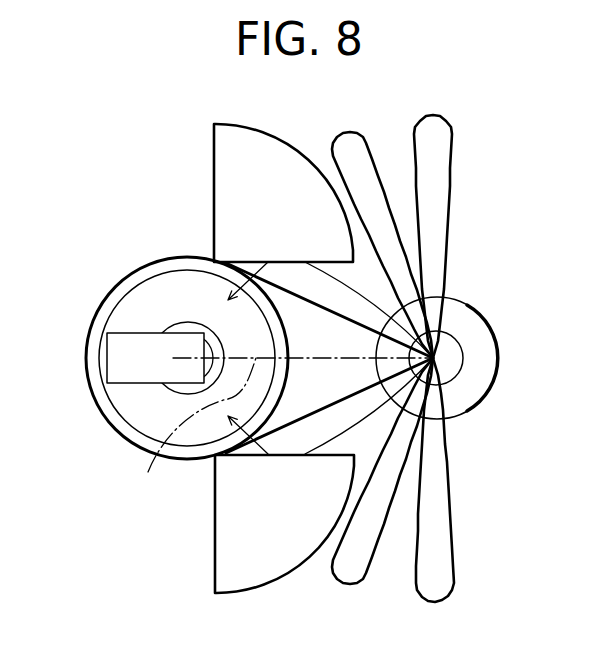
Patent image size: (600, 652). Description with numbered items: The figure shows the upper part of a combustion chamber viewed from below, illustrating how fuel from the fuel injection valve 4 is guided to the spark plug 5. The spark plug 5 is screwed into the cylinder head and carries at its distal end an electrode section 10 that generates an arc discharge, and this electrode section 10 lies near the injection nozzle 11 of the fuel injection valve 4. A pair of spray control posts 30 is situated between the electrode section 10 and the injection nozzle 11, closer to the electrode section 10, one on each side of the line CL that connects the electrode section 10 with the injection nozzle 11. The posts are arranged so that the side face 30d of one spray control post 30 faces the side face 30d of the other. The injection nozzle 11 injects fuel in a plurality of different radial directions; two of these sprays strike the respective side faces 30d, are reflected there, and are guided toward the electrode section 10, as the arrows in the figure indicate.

The fuel injection valve 4 is at (492, 328).
The injection nozzle 11 is at (437, 360).
The spray control post 30 is at (204, 168).
The side face 30d is at (348, 277).
The spark plug 5 is at (92, 400).
The electrode section 10 is at (141, 314).
The line connecting the electrode section and the injection nozzle CL is at (280, 432).